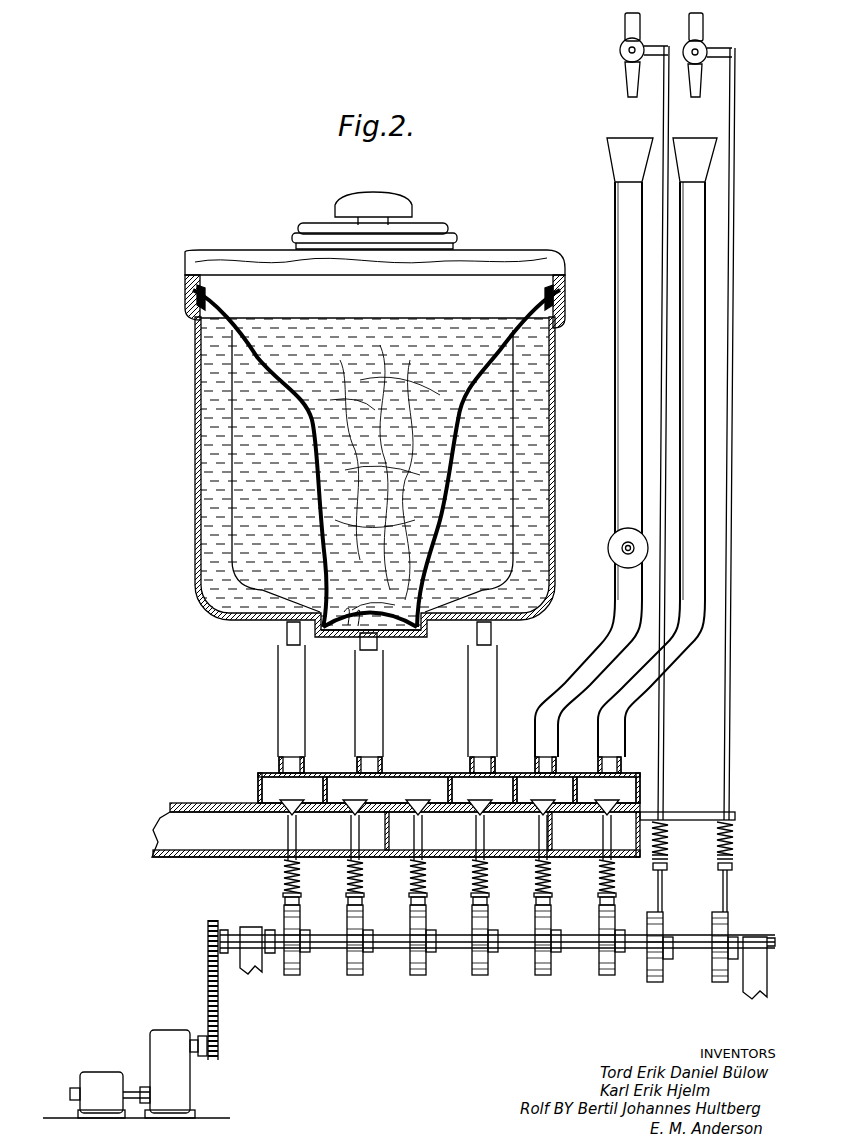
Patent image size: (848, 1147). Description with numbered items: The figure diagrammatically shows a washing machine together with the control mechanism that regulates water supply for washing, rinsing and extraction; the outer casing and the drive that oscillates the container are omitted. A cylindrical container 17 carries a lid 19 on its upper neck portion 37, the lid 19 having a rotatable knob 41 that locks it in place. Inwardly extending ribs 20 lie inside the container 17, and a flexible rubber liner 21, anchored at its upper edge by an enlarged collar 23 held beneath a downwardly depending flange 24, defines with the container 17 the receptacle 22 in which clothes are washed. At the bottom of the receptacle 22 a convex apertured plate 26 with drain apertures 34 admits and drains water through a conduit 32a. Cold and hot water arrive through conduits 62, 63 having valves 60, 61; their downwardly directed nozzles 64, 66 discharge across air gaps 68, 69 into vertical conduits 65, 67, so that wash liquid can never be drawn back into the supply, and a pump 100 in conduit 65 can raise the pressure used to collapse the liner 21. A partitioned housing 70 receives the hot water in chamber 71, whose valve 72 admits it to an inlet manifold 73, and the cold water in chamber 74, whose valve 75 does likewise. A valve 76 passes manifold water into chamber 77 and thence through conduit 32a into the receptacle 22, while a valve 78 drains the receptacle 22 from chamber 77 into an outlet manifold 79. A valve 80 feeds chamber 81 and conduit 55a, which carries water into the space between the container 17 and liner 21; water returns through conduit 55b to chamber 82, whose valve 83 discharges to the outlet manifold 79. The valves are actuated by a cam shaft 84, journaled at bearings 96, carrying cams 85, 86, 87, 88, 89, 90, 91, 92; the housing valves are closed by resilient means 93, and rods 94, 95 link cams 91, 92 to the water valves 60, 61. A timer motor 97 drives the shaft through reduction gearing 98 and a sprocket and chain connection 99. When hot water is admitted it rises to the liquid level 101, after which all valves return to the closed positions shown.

The container 17 is at (195, 435).
The lid 19 is at (425, 222).
The ribs 20 is at (232, 474).
The flexible liner 21 is at (258, 340).
The receptacle 22 is at (375, 457).
The collar 23 is at (186, 302).
The gasket 24 is at (197, 288).
The apertured plate 26 is at (396, 638).
The conduit 32a is at (383, 722).
The apertures 34 is at (347, 628).
The neck portion 37 is at (460, 243).
The knob 41 is at (378, 198).
The conduit 55a is at (497, 688).
The conduit 55b is at (278, 700).
The valve 60 is at (620, 54).
The valve 61 is at (708, 46).
The conduit 62 is at (626, 23).
The conduit 63 is at (690, 24).
The nozzle 64 is at (628, 83).
The vertical conduit 65 is at (622, 200).
The nozzle 66 is at (704, 82).
The vertical conduit 67 is at (693, 214).
The air gap 68 is at (624, 121).
The air gap 69 is at (704, 119).
The housing 70 is at (258, 781).
The chamber 71 is at (604, 790).
The valve 72 is at (600, 815).
The inlet manifold 73 is at (503, 840).
The chamber 74 is at (543, 790).
The valve 75 is at (540, 817).
The valve 76 is at (412, 815).
The chamber 77 is at (385, 790).
The valve 78 is at (347, 813).
The outlet manifold 79 is at (443, 834).
The valve 80 is at (475, 815).
The chamber 81 is at (480, 790).
The chamber 82 is at (292, 790).
The valve 83 is at (283, 813).
The cam shaft 84 is at (584, 950).
The cam 85 is at (290, 976).
The cam 86 is at (355, 976).
The cam 87 is at (418, 976).
The cam 88 is at (480, 976).
The cam 89 is at (543, 976).
The cam 90 is at (606, 976).
The cam 91 is at (656, 983).
The cam 92 is at (718, 983).
The resilient means 93 is at (328, 882).
The rod 94 is at (664, 775).
The rod 95 is at (729, 764).
The journal 96 is at (250, 928).
The timer motor 97 is at (95, 1072).
The reduction gearing 98 is at (162, 1034).
The sprocket and chain connection 99 is at (207, 969).
The pump 100 is at (608, 549).
The liquid level 101 is at (328, 318).